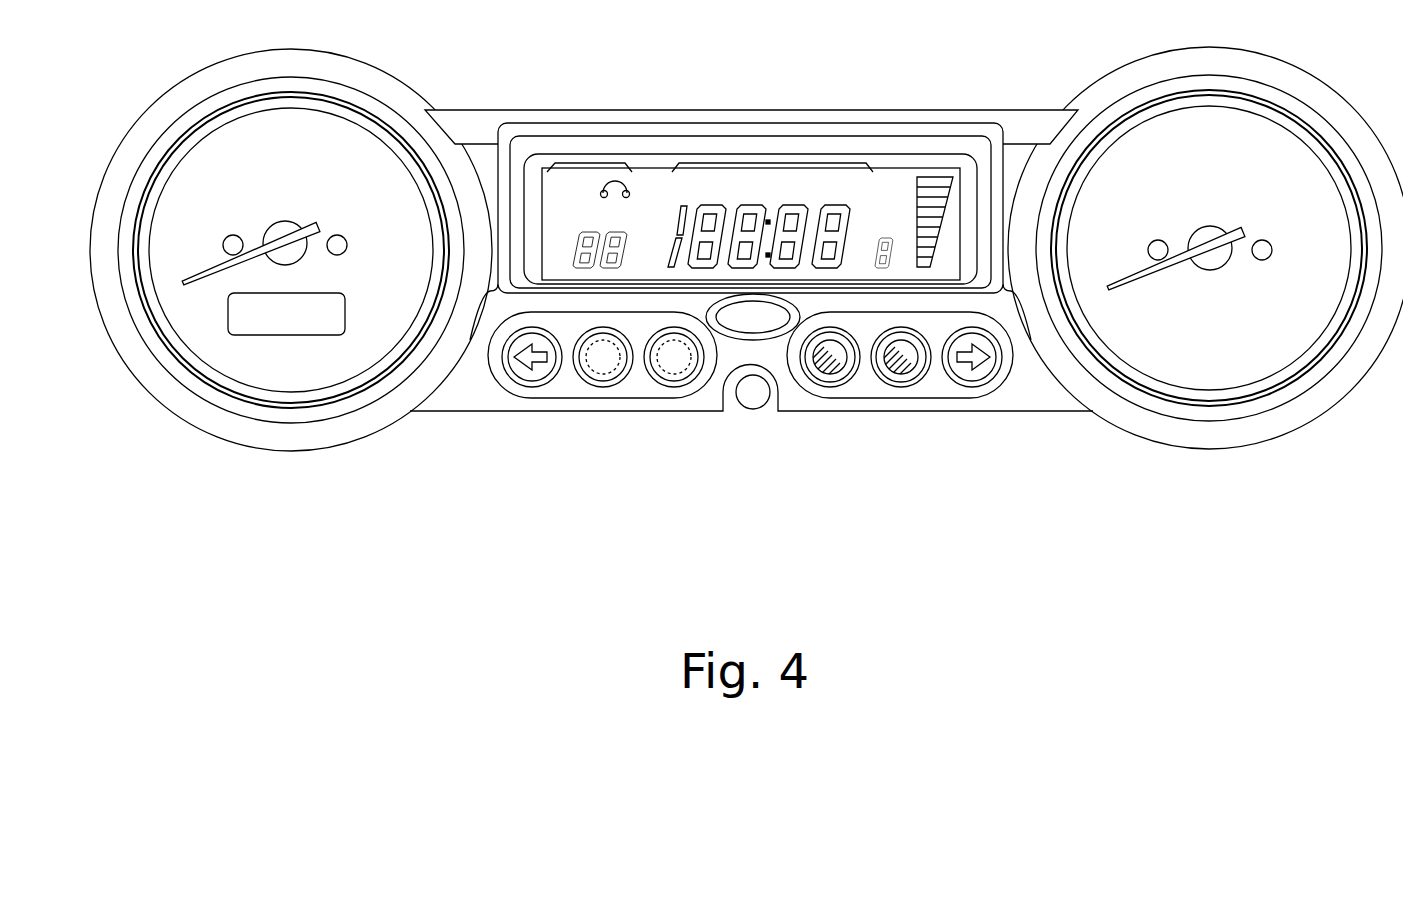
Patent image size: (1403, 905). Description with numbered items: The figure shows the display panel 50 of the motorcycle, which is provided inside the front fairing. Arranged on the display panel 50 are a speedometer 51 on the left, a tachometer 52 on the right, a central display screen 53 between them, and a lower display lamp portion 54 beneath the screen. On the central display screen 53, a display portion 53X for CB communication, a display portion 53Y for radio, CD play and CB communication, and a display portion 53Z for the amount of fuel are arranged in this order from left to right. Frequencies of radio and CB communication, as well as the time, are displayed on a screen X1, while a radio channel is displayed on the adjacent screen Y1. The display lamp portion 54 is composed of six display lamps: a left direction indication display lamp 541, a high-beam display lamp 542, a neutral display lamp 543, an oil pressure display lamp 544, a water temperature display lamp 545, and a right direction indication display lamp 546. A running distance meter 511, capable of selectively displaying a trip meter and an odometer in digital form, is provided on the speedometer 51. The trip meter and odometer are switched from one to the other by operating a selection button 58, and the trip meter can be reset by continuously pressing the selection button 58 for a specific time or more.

The display panel 50 is at (343, 483).
The speedometer 51 is at (291, 248).
The running distance meter 511 is at (228, 328).
The tachometer 52 is at (1145, 137).
The central display screen 53 is at (757, 170).
The display portion for CB communication 53X is at (581, 164).
The display portion for radio, CD play, and CB communication 53Y is at (770, 162).
The display portion for the amount of fuel 53Z is at (947, 165).
The screen X1 is at (634, 222).
The frequency/time display portion Y1 is at (860, 213).
The display lamp portion 54 is at (748, 390).
The left direction indication display lamp 541 is at (522, 390).
The high-beam display lamp 542 is at (604, 390).
The neutral display lamp 543 is at (688, 390).
The oil pressure display lamp 544 is at (845, 385).
The water temperature display lamp 545 is at (927, 385).
The right direction indication display lamp 546 is at (972, 385).
The selection button 58 is at (735, 343).